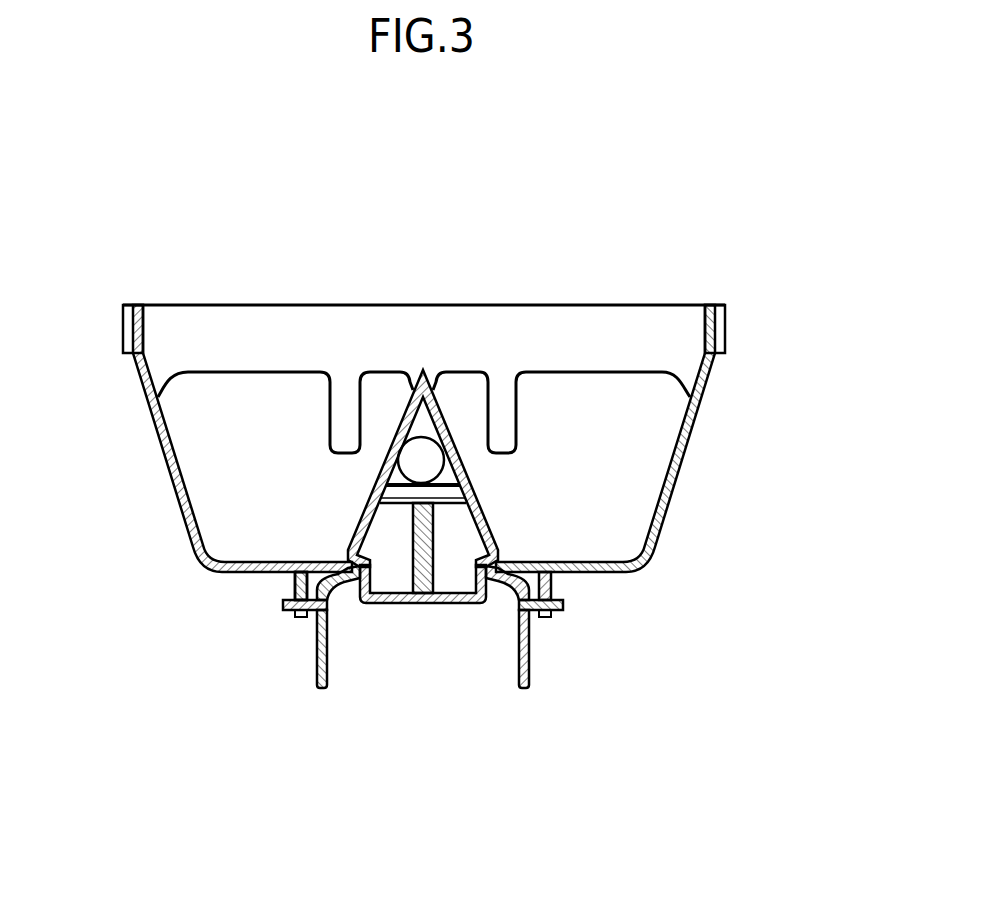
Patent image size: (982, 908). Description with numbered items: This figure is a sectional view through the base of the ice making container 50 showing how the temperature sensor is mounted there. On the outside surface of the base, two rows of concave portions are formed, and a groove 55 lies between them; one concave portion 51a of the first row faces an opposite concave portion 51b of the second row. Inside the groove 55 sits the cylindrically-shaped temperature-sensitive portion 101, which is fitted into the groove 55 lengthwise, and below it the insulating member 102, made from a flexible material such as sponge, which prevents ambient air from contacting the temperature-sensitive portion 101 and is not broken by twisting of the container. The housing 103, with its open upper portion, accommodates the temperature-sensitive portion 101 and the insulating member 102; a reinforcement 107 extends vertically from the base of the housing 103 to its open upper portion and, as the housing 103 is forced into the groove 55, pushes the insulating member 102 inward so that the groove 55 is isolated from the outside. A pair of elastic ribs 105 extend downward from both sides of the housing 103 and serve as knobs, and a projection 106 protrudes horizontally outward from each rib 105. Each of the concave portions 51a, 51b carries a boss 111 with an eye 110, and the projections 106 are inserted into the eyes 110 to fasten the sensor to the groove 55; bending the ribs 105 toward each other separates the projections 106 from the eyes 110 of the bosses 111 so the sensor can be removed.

The ice making container 50 is at (448, 390).
The concave portion of the first row 51a is at (668, 476).
The concave portion of the second row 51b is at (172, 478).
The groove 55 is at (427, 390).
The temperature-sensitive portion 101 is at (420, 462).
The insulating member 102 is at (383, 483).
The housing 103 is at (385, 605).
The rib 105 is at (530, 672).
The projection 106 is at (562, 612).
The reinforcement 107 is at (433, 560).
The eye 110 is at (297, 617).
The boss 111 is at (292, 583).